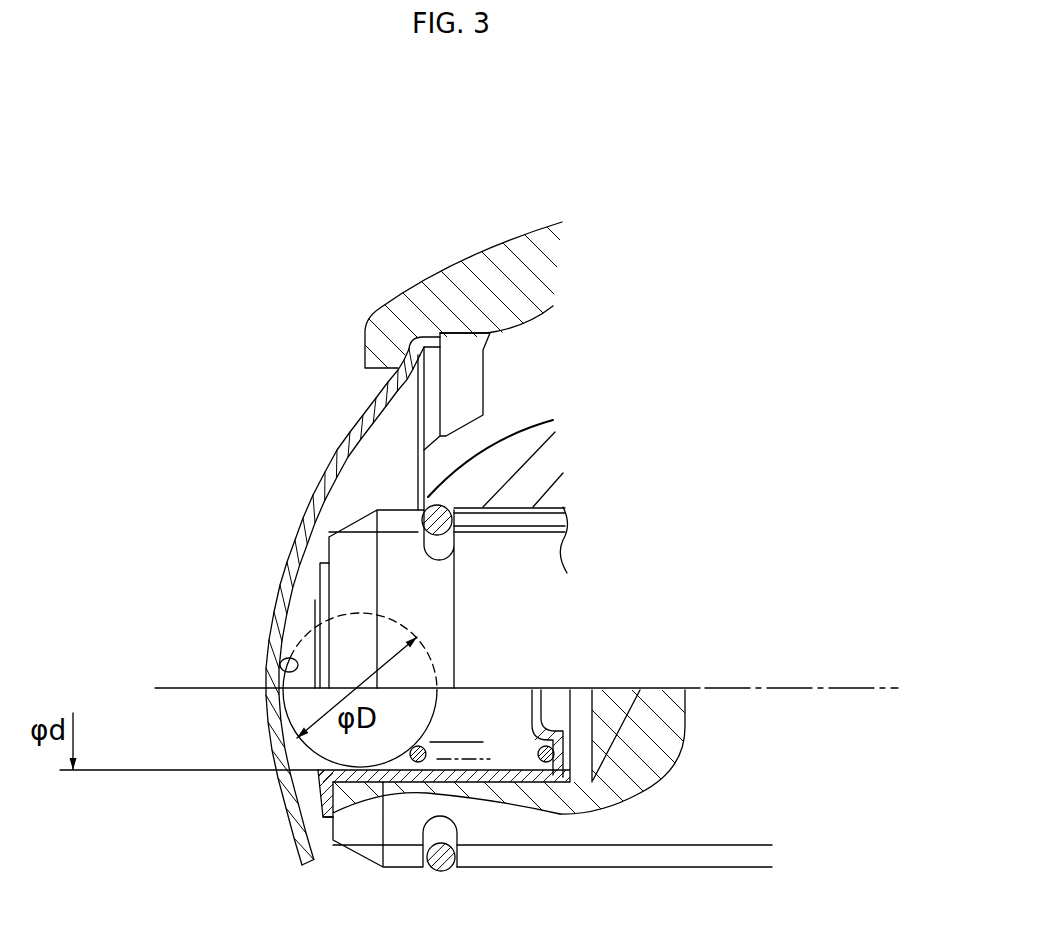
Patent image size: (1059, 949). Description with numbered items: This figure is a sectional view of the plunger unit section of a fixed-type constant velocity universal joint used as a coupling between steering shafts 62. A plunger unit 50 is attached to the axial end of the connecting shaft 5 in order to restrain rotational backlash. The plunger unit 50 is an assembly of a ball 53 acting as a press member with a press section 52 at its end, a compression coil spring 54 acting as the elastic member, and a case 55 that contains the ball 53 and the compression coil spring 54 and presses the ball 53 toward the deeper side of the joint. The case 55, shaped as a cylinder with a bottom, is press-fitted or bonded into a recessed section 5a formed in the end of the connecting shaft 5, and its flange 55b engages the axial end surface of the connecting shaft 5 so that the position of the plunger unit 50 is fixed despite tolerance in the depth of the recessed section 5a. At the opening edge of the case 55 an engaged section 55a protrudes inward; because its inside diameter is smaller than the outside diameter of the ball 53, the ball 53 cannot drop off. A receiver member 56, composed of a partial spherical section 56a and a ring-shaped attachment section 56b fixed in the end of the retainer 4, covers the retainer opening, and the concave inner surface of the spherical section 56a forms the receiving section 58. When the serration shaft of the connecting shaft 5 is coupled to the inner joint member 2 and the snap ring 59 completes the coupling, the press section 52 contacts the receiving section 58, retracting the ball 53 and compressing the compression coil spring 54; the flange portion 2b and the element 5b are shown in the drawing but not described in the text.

The inner joint member 2 is at (558, 462).
The flange portion 2b is at (522, 307).
The retainer 4 is at (463, 258).
The connecting shaft 5 is at (553, 553).
The recessed section 5a is at (592, 782).
The outer ring 5b is at (327, 543).
The plunger unit 50 is at (290, 800).
The press section 52 is at (268, 671).
The ball 53 is at (297, 714).
The compression coil spring 54 is at (493, 700).
The case 55 is at (512, 790).
The engaged section 55a is at (305, 760).
The flange 55b is at (291, 812).
The receiver member 56 is at (268, 613).
The spherical section 56a is at (280, 578).
The attachment section 56b is at (412, 338).
The receiving section 58 is at (267, 662).
The snap ring 59 is at (439, 872).
The steering shaft 62 is at (667, 825).